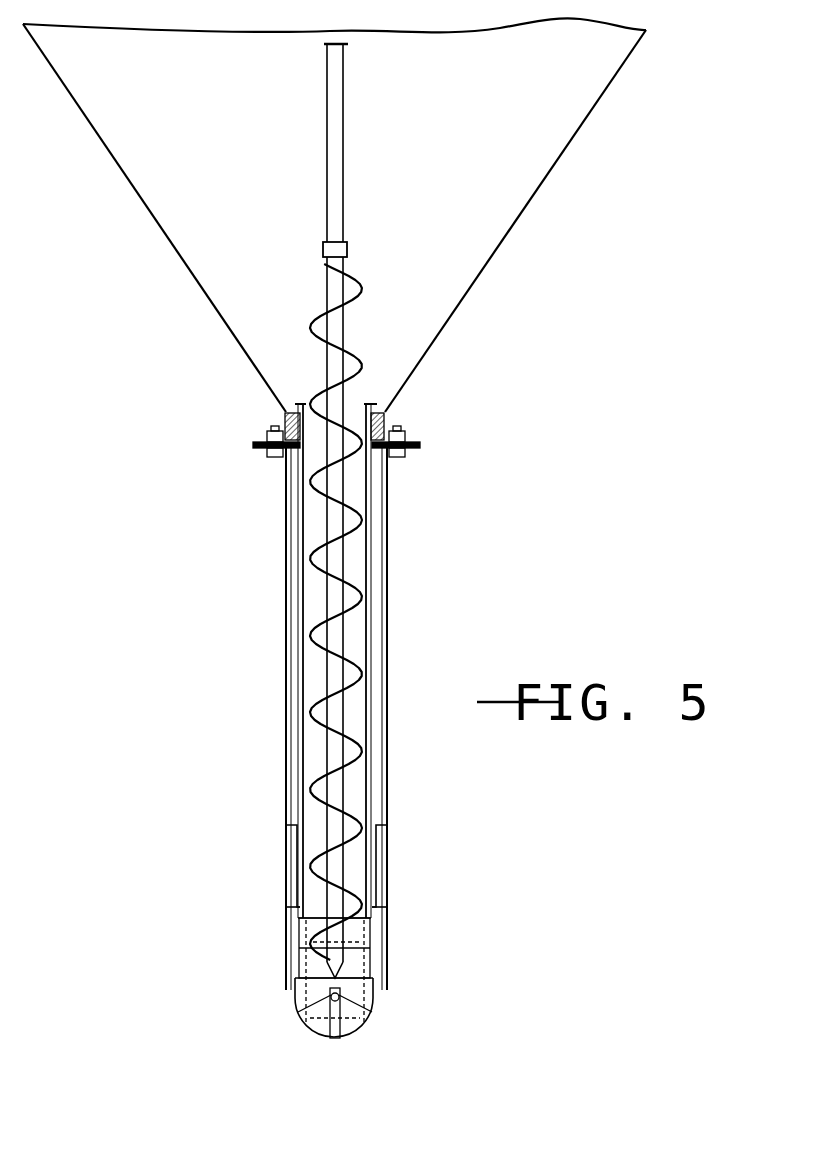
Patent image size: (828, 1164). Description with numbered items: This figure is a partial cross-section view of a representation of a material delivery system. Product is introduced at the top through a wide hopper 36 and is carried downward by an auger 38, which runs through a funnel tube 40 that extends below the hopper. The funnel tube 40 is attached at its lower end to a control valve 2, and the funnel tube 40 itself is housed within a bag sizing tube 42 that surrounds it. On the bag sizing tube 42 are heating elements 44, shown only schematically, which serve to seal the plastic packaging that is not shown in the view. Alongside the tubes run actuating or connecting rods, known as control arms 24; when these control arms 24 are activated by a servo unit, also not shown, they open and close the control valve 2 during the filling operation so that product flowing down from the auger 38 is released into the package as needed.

The control valve 2 is at (355, 1042).
The control arms 24 is at (298, 505).
The hopper 36 is at (478, 285).
The auger 38 is at (343, 488).
The funnel tube 40 is at (367, 768).
The bag sizing tube 42 is at (388, 702).
The heating elements 44 is at (382, 868).